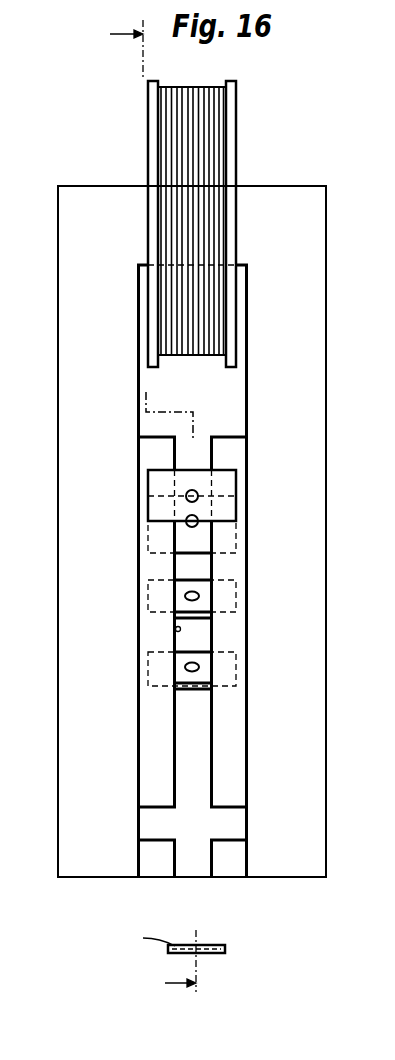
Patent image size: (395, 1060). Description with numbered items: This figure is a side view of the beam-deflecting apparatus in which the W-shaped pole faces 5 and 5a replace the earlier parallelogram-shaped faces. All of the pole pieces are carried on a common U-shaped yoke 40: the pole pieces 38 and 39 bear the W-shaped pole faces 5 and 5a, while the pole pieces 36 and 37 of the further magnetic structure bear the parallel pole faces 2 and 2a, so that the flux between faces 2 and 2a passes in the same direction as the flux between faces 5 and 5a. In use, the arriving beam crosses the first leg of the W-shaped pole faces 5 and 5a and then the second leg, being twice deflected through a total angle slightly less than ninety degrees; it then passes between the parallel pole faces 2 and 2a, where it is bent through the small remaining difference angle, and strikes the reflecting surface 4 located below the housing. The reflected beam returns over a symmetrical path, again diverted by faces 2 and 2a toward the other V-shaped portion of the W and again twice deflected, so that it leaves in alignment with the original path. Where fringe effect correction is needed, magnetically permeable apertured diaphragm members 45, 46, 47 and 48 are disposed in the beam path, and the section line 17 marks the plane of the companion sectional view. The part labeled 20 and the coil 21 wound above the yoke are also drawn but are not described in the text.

The parallel pole face 2 is at (213, 855).
The parallel pole face 2a is at (172, 853).
The reflecting surface 4 is at (213, 953).
The W-shaped pole face 5 is at (210, 645).
The W-shaped pole face 5a is at (175, 628).
The section line 17 is at (151, 512).
The housing 20 is at (8, 830).
The coil 21 is at (212, 138).
The pole piece 36 is at (220, 863).
The pole piece 37 is at (165, 867).
The pole piece 38 is at (228, 761).
The pole piece 39 is at (151, 727).
The U-shaped yoke 40 is at (93, 386).
The apertured diaphragm member 45 is at (154, 677).
The apertured diaphragm member 46 is at (150, 606).
The apertured diaphragm member 47 is at (150, 549).
The apertured diaphragm member 48 is at (197, 481).